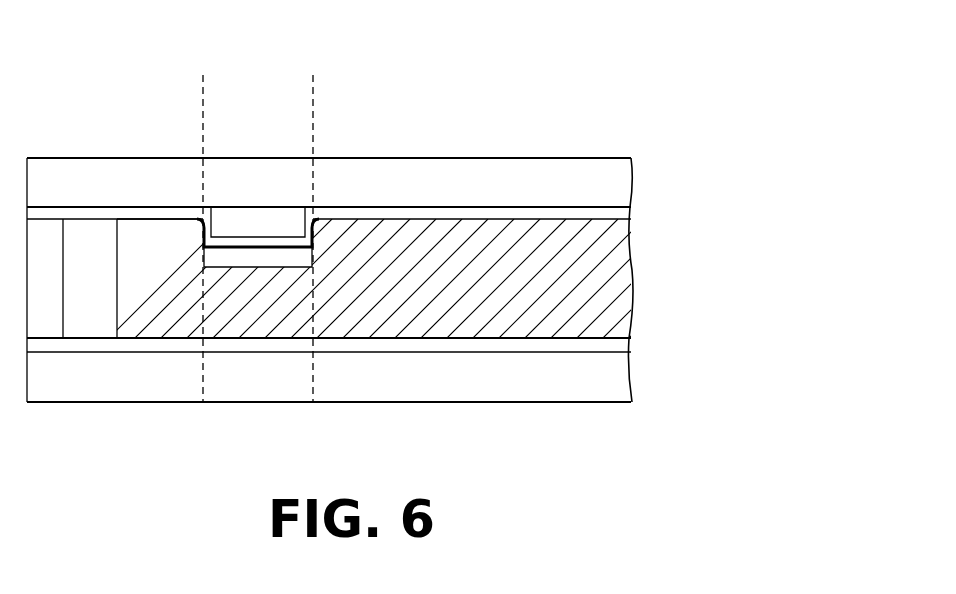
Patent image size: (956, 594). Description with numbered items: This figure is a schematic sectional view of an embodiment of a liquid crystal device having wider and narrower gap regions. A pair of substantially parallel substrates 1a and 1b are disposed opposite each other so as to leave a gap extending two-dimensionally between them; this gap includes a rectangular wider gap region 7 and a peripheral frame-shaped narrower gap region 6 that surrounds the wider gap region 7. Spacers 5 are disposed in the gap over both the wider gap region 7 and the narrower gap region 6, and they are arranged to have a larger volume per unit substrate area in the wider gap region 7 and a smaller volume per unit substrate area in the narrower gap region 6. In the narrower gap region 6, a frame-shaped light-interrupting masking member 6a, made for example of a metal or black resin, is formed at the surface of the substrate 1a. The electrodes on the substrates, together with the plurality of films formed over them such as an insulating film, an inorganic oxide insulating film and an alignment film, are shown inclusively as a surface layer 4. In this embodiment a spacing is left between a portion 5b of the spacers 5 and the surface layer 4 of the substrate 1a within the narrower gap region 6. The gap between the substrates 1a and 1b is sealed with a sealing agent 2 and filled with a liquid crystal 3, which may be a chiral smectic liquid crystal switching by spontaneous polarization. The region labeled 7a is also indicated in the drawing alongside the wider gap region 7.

The substrate 1a is at (519, 172).
The substrate 1b is at (545, 387).
The sealing agent 2 is at (47, 228).
The liquid crystal 3 is at (95, 228).
The surface layer 4 is at (632, 212).
The spacers 5 is at (625, 280).
The portion of the spacers 5b is at (247, 267).
The narrower gap region 6 is at (313, 74).
The masking member 6a is at (257, 213).
The wider gap region 7 is at (622, 67).
The peripheral region 7a is at (203, 67).